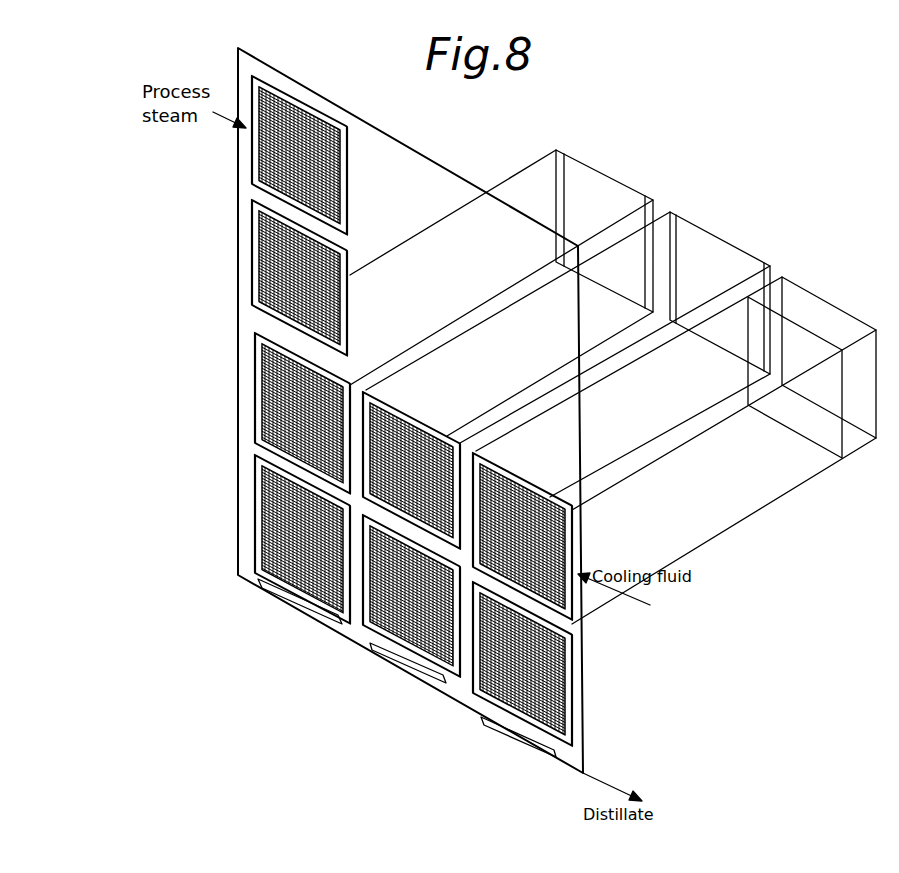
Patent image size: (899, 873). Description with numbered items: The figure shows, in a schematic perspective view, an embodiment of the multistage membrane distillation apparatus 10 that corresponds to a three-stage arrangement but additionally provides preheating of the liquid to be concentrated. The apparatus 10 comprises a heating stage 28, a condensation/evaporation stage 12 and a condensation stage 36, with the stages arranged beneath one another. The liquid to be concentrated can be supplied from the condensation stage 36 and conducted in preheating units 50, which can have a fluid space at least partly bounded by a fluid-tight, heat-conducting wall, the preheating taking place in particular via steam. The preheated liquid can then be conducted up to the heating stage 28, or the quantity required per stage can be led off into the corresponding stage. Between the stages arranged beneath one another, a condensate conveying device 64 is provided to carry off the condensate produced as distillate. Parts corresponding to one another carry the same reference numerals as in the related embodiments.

The multistage membrane distillation apparatus 10 is at (706, 72).
The condensation/evaporation stage 12 is at (468, 140).
The heating stage 28 is at (311, 68).
The condensation stage 36 is at (573, 222).
The preheating unit 50 is at (253, 160).
The condensate conveying device 64 is at (287, 600).